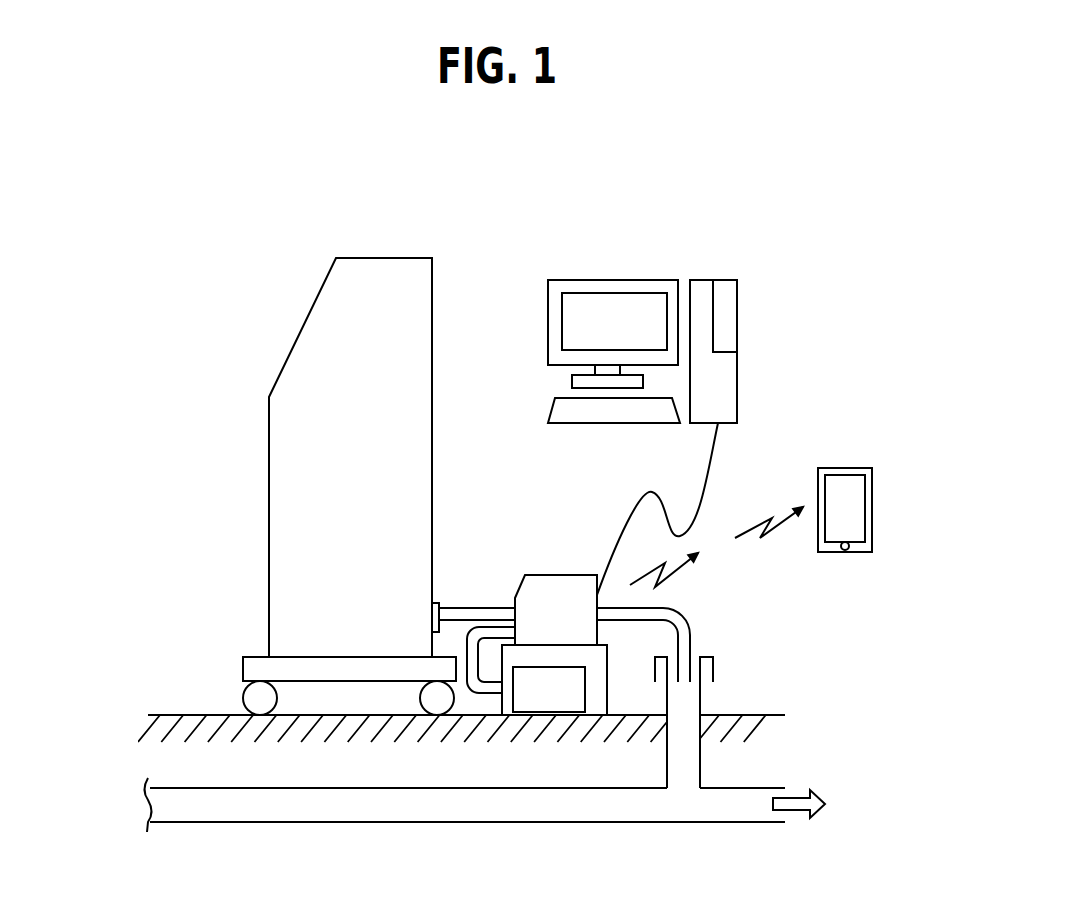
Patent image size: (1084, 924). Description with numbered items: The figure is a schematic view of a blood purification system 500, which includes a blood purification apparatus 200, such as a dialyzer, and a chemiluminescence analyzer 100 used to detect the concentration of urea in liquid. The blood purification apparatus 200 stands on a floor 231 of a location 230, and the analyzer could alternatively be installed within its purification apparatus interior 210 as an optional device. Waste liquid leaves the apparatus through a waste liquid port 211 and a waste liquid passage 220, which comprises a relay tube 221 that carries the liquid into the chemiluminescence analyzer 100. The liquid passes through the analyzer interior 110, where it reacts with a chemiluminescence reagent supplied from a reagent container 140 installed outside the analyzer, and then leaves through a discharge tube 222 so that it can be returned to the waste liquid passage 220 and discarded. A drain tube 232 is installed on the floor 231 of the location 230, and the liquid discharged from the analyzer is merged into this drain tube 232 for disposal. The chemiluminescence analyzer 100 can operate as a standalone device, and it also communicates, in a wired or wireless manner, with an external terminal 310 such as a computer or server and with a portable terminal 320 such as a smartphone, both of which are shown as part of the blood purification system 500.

The chemiluminescence analyzer 100 is at (558, 570).
The analyzer interior 110 is at (573, 630).
The reagent container 140 is at (567, 706).
The blood purification apparatus 200 is at (295, 303).
The purification apparatus interior 210 is at (368, 479).
The waste liquid port 211 is at (434, 604).
The waste liquid passage 220 is at (778, 580).
The relay tube 221 is at (473, 608).
The discharge tube 222 is at (690, 642).
The location 230 is at (175, 620).
The floor 231 is at (195, 715).
The drain tube 232 is at (702, 700).
The external terminal 310 is at (705, 270).
The portable terminal 320 is at (873, 488).
The blood purification system 500 is at (662, 215).